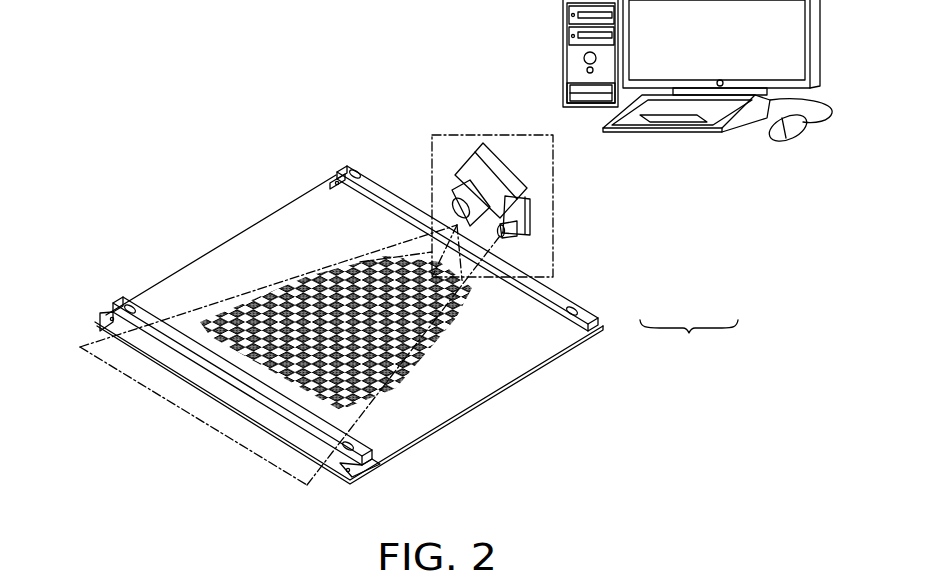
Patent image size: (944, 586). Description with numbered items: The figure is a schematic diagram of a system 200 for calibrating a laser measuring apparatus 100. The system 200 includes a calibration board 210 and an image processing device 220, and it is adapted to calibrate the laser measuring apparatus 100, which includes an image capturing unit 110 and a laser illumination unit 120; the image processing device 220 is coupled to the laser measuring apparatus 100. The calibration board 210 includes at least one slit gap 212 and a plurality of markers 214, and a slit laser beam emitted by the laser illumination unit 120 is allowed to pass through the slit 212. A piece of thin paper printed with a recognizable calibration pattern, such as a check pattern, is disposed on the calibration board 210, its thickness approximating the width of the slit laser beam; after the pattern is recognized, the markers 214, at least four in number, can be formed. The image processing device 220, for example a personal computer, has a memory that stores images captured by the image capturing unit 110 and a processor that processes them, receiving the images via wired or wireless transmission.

The laser measuring apparatus 100 is at (518, 176).
The image capturing unit 110 is at (510, 185).
The laser illumination unit 120 is at (519, 229).
The system for calibrating a laser measuring apparatus 200 is at (689, 340).
The calibration board 210 is at (600, 318).
The slit gap 212 is at (548, 322).
The markers 214 is at (343, 275).
The image processing device 220 is at (692, 132).